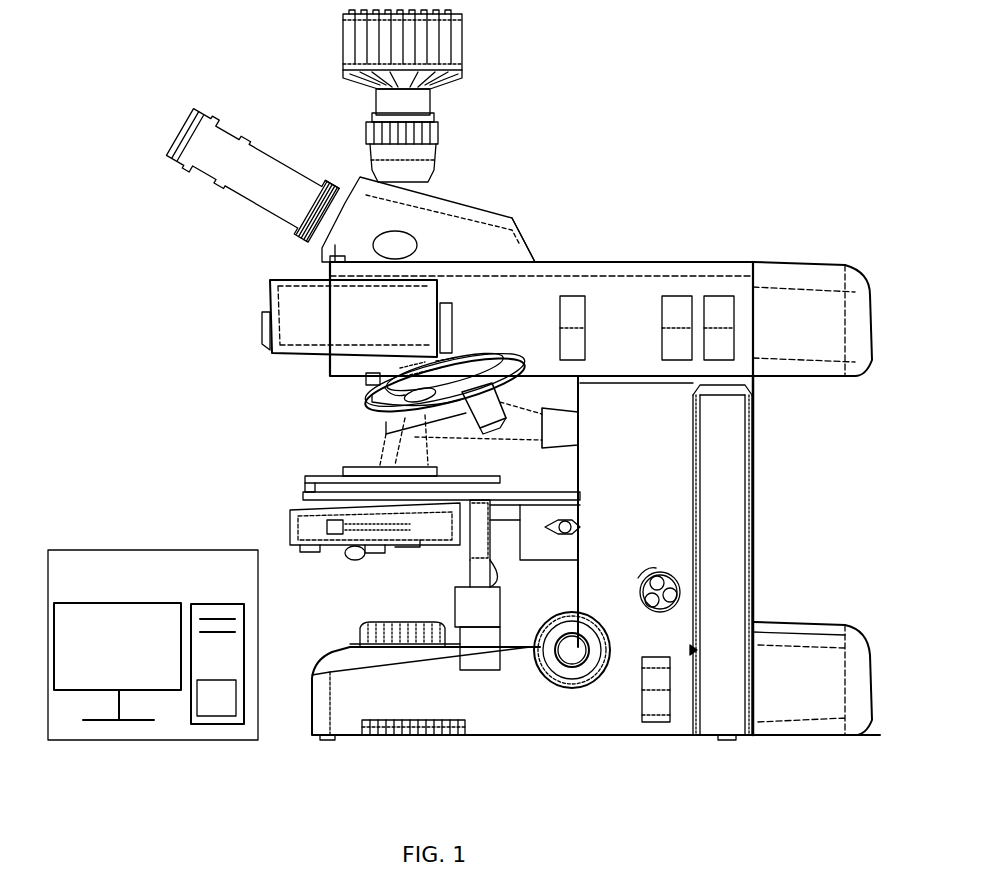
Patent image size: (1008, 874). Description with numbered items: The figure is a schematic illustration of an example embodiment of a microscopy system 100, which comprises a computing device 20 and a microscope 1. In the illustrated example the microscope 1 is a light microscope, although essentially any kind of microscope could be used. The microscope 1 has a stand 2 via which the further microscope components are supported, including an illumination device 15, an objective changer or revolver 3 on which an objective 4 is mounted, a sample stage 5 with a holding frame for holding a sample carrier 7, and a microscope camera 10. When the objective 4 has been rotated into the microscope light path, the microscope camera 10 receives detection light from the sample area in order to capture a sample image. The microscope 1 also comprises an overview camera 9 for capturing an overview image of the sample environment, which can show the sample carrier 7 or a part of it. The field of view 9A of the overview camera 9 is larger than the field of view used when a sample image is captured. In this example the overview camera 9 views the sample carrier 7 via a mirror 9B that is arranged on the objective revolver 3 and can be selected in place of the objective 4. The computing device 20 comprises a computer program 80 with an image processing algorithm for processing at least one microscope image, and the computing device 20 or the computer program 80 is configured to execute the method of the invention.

The microscopy system 100 is at (622, 60).
The microscope 1 is at (719, 229).
The stand 2 is at (737, 487).
The objective changer/revolver 3 is at (366, 380).
The objective 4 is at (498, 390).
The sample stage 5 is at (328, 492).
The sample carrier 7 is at (342, 477).
The overview camera 9 is at (564, 440).
The field of view 9A is at (384, 446).
The mirror 9B is at (385, 420).
The microscope camera 10 is at (452, 36).
The illumination device 15 is at (365, 690).
The computing device 20 is at (166, 591).
The computer program 80 is at (234, 709).